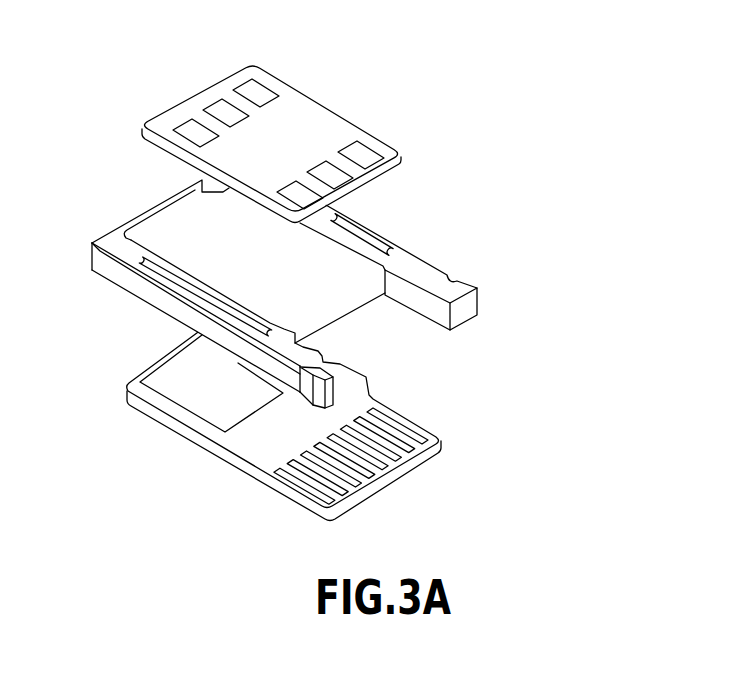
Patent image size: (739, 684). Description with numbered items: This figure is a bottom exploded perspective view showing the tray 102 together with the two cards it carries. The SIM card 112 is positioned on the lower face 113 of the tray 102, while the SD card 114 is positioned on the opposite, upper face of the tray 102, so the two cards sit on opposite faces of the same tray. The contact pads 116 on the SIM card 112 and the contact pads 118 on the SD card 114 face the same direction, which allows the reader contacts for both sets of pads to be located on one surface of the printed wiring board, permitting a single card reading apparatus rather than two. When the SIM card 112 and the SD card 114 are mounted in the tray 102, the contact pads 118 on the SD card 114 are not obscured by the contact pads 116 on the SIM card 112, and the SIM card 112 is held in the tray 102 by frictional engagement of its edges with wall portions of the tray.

The tray 102 is at (304, 294).
The SIM card 112 is at (259, 117).
The lower face 113 is at (187, 248).
The SD card 114 is at (310, 434).
The contact pads 116 is at (255, 88).
The contact pads 118 is at (380, 432).